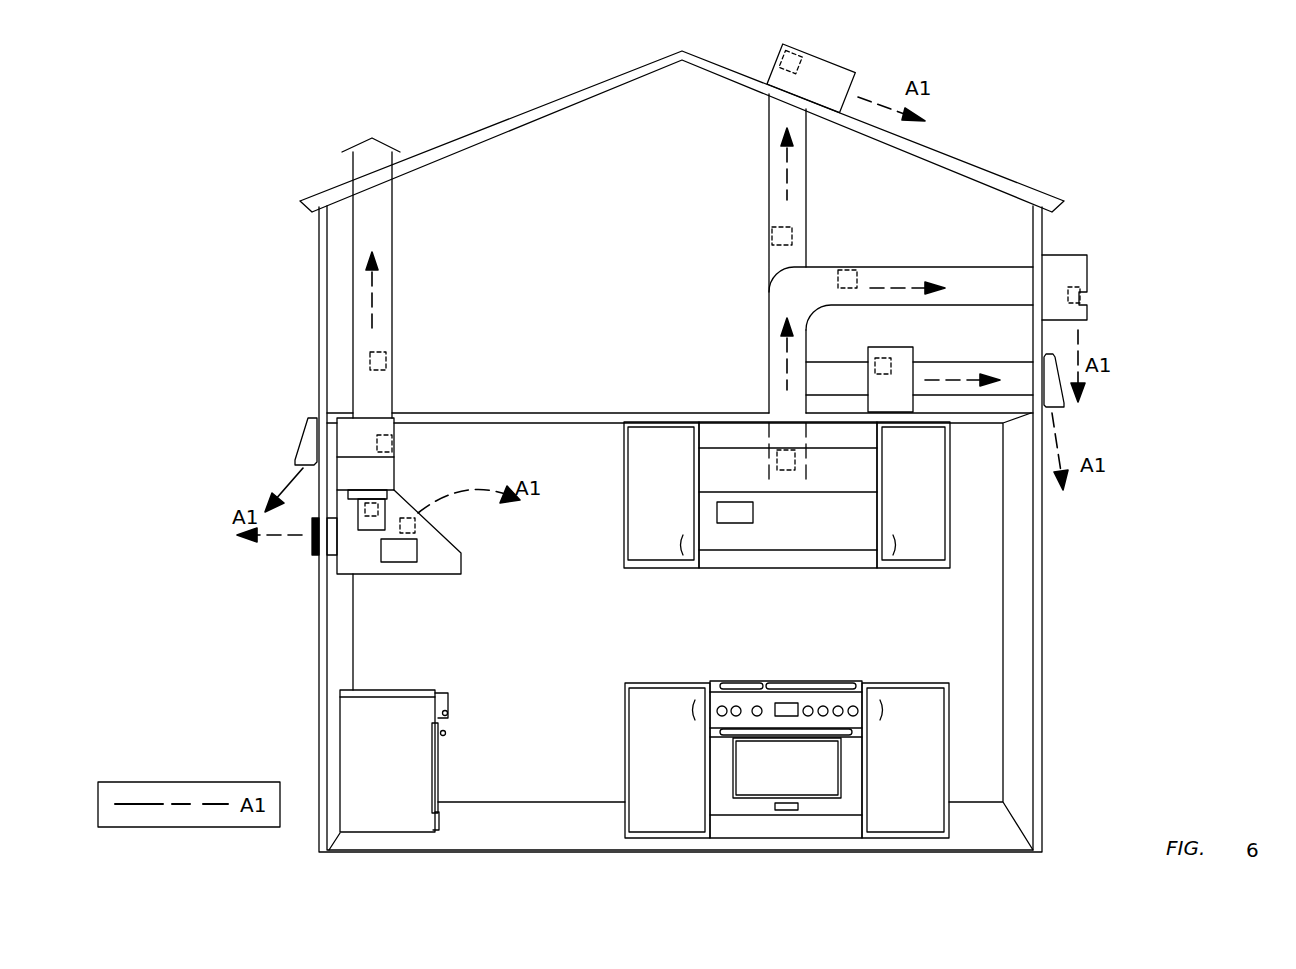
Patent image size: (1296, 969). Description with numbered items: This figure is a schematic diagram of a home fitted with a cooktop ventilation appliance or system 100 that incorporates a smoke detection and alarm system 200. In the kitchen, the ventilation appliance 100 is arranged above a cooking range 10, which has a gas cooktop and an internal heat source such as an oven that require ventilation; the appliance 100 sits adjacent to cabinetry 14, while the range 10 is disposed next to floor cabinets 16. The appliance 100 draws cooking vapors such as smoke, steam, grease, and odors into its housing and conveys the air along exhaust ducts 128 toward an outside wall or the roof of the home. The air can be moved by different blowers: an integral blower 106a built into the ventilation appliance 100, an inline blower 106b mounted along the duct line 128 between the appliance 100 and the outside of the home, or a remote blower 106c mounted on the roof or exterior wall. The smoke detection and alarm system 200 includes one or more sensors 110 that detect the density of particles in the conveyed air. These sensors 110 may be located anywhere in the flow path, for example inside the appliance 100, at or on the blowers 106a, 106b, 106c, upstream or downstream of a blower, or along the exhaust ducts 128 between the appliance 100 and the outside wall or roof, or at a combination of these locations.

The cooking range 10 is at (383, 690).
The cabinetry 14 is at (648, 570).
The floor cabinets 16 is at (913, 683).
The ventilation appliance or system 100 is at (465, 573).
The integral blower 106a is at (365, 530).
The inline blower 106b is at (913, 352).
The remote blower 106c is at (826, 57).
The sensor 110 is at (395, 362).
The exhaust duct 128 is at (395, 250).
The smoke detection and alarm system 200 is at (402, 555).